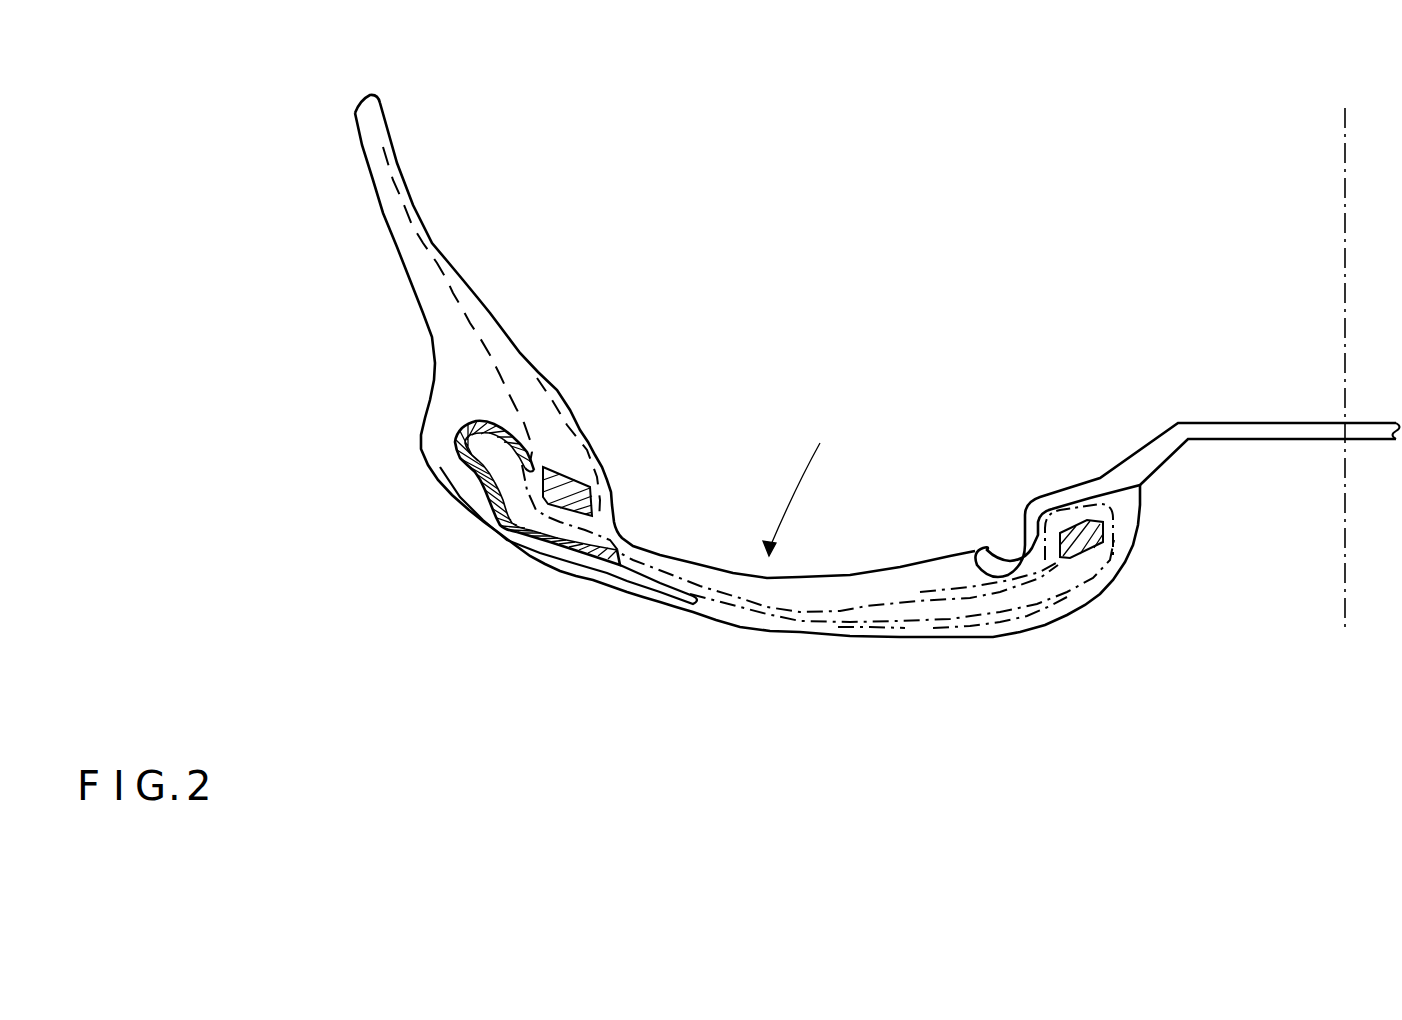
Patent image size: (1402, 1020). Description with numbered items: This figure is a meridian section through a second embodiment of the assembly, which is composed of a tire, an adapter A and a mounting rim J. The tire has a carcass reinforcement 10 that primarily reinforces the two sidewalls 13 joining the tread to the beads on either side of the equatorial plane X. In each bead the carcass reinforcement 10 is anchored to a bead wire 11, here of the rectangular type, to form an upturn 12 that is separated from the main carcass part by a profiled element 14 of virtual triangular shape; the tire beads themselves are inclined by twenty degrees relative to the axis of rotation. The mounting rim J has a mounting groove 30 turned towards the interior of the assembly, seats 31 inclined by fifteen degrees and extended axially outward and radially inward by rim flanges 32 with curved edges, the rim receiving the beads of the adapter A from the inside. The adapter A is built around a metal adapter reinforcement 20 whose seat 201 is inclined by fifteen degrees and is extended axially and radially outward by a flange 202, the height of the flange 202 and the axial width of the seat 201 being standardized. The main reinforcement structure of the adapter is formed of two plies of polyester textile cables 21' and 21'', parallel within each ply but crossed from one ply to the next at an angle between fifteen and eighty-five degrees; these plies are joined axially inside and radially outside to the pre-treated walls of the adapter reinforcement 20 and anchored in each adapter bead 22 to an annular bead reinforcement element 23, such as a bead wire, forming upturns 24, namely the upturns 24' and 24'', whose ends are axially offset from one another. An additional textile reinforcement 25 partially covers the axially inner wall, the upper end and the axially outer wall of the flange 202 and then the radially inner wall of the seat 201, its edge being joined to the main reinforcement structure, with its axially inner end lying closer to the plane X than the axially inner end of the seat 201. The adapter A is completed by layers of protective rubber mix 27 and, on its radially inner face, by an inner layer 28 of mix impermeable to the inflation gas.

The carcass reinforcement 10 is at (427, 247).
The bead wire 11 is at (590, 467).
The upturn 12 is at (490, 358).
The sidewall 13 is at (394, 209).
The profiled element 14 is at (537, 397).
The adapter reinforcement 20 is at (493, 524).
The seat 201 is at (547, 540).
The flange 202 is at (507, 485).
The additional reinforcement 25 is at (455, 432).
The ply of textile cables 21' is at (1000, 681).
The ply of textile cables 21'' is at (873, 714).
The adapter bead 22 is at (1040, 596).
The annular bead reinforcement element 23 is at (1105, 540).
The upturns 24 is at (790, 529).
The upturn 24' is at (984, 521).
The upturn 24'' is at (902, 581).
The layers of protective rubber mix 27 is at (746, 626).
The inner layer 28 is at (727, 578).
The mounting groove 30 is at (1242, 460).
The seat 31 is at (1073, 497).
The rim flange 32 is at (1018, 557).
The adapter A is at (792, 486).
The mounting rim J is at (1278, 428).
The equatorial plane X is at (1363, 378).